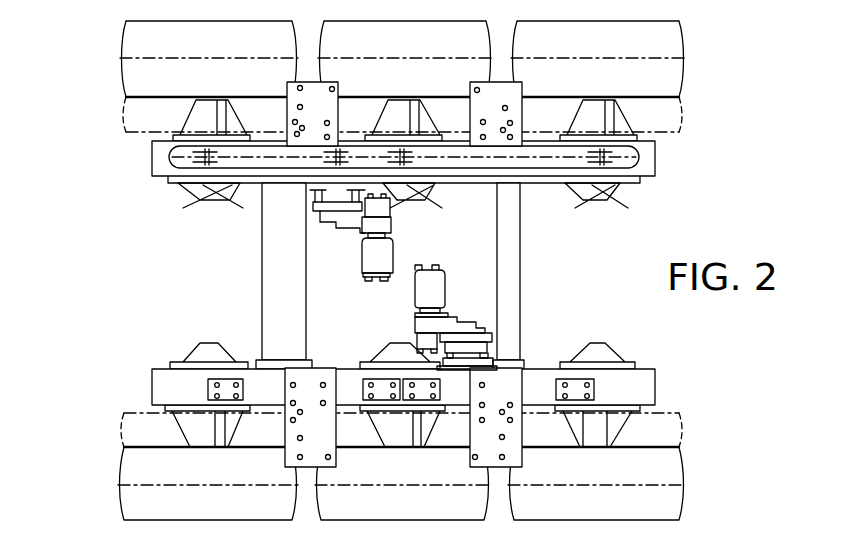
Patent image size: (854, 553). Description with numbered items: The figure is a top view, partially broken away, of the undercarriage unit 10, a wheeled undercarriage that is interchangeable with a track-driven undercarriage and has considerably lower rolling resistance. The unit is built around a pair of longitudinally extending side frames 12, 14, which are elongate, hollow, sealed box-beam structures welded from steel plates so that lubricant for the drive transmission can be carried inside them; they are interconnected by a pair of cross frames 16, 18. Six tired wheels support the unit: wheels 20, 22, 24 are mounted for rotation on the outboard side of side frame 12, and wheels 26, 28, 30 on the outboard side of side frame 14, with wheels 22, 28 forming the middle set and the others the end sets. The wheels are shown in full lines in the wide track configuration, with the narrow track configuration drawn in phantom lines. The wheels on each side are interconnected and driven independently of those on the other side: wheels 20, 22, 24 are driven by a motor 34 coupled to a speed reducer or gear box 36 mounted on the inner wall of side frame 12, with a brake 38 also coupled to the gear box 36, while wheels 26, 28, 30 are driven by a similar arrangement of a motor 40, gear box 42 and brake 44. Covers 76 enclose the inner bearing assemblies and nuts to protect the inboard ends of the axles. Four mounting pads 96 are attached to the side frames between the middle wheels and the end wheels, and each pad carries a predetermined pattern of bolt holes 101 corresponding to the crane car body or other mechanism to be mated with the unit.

The undercarriage unit 10 is at (88, 173).
The side frame 12 is at (645, 157).
The side frame 14 is at (640, 387).
The cross frame 16 is at (277, 250).
The cross frame 18 is at (510, 245).
The wheel 20 is at (137, 48).
The wheel 22 is at (371, 35).
The wheel 24 is at (672, 48).
The wheel 26 is at (138, 495).
The wheel 28 is at (377, 510).
The wheel 30 is at (667, 500).
The motor 34 is at (383, 250).
The gear box 36 is at (333, 215).
The brake 38 is at (382, 203).
The motor 40 is at (427, 290).
The gear box 42 is at (472, 328).
The brake 44 is at (423, 337).
The cover 76 is at (205, 193).
The mounting pad 96 is at (330, 108).
The bolt holes 101 is at (297, 96).